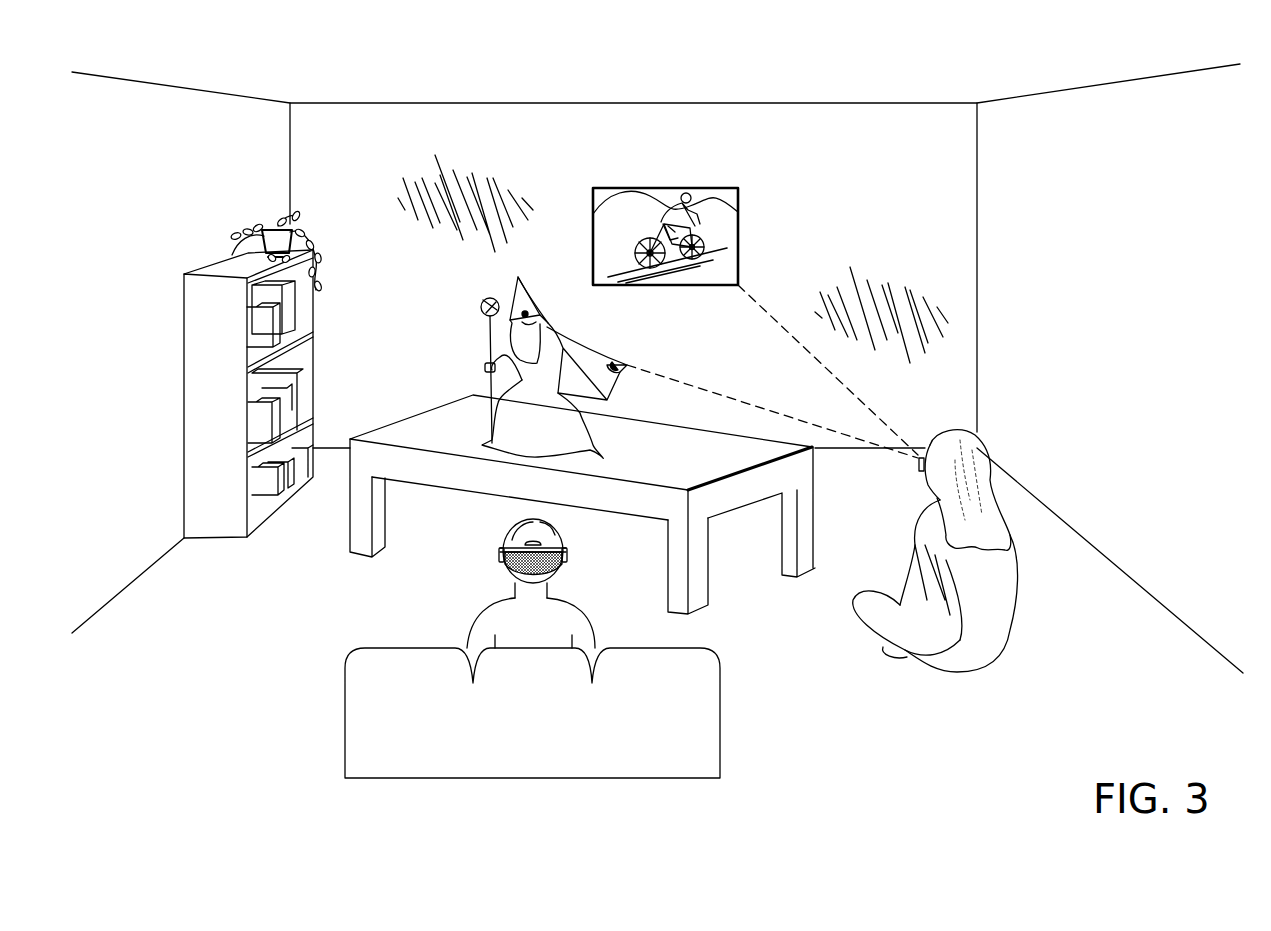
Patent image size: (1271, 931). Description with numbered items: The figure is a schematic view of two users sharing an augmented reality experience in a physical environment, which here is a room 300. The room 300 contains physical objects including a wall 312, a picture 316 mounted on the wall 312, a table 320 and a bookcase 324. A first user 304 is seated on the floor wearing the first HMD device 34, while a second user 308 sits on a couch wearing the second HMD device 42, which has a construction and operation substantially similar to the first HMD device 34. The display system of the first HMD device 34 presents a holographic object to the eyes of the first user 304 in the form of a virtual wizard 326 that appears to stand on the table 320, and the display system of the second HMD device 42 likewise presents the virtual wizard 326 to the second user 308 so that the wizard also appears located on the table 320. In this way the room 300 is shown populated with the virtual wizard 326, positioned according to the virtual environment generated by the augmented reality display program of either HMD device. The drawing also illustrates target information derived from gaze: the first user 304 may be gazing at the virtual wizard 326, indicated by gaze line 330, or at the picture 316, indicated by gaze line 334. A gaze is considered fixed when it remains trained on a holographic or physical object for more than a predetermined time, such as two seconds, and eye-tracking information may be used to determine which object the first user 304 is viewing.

The room 300 is at (762, 121).
The first user 304 is at (1013, 600).
The second user 308 is at (595, 615).
The wall 312 is at (858, 217).
The picture 316 is at (626, 188).
The table 320 is at (435, 430).
The bookcase 324 is at (183, 280).
The virtual wizard 326 is at (551, 446).
The gaze line 330 is at (707, 387).
The gaze line 334 is at (770, 312).
The first HMD device 34 is at (920, 456).
The second HMD device 42 is at (505, 548).